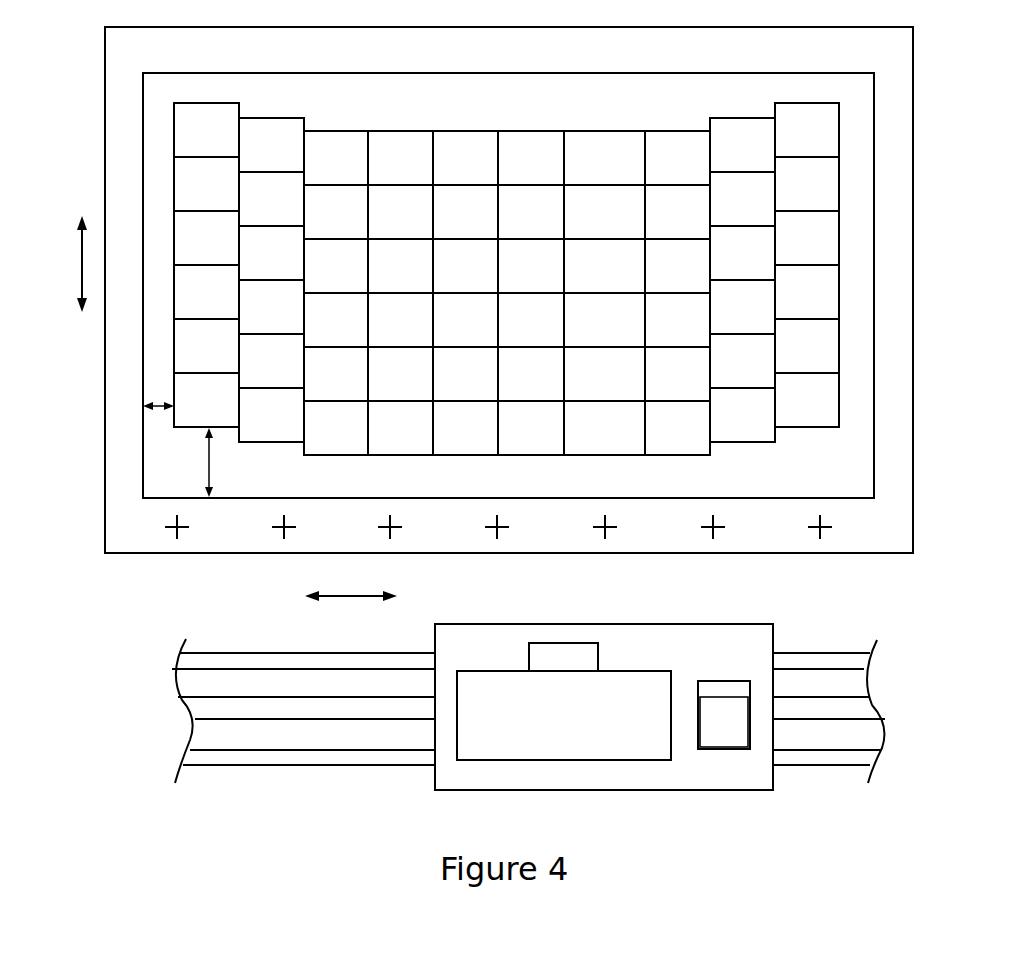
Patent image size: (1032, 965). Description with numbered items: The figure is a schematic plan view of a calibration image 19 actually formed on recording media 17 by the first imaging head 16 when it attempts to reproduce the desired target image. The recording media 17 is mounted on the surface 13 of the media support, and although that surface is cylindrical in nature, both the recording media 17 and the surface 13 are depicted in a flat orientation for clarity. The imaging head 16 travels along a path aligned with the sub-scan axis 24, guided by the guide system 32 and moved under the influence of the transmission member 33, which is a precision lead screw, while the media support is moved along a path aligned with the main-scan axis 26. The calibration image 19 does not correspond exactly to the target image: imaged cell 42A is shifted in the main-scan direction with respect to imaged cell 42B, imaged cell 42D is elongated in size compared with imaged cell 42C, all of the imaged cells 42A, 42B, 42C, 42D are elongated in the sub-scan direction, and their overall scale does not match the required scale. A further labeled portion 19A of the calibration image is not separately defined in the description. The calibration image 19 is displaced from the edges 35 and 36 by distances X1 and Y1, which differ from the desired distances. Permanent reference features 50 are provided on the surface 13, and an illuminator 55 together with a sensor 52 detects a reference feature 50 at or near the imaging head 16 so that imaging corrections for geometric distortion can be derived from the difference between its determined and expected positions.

The surface of media support 13 is at (128, 163).
The edge 35 is at (142, 455).
The edge 36 is at (163, 498).
The imaged cell 42A is at (263, 137).
The imaged cell 42B is at (342, 145).
The imaged cell 42C is at (537, 145).
The imaged cell 42D is at (603, 145).
The calibration image 19 is at (445, 133).
The recording media 17 is at (804, 88).
The array edge 19A is at (840, 135).
The main-scan axis 26 is at (80, 260).
The sub-scan axis 24 is at (340, 597).
The distance X1 is at (157, 400).
The distance Y1 is at (212, 462).
The reference feature 50 is at (712, 532).
The guide system 32 is at (234, 661).
The transmission member 33 is at (337, 708).
The imaging head 16 is at (585, 760).
The sensor 52 is at (728, 690).
The illuminator 55 is at (717, 723).